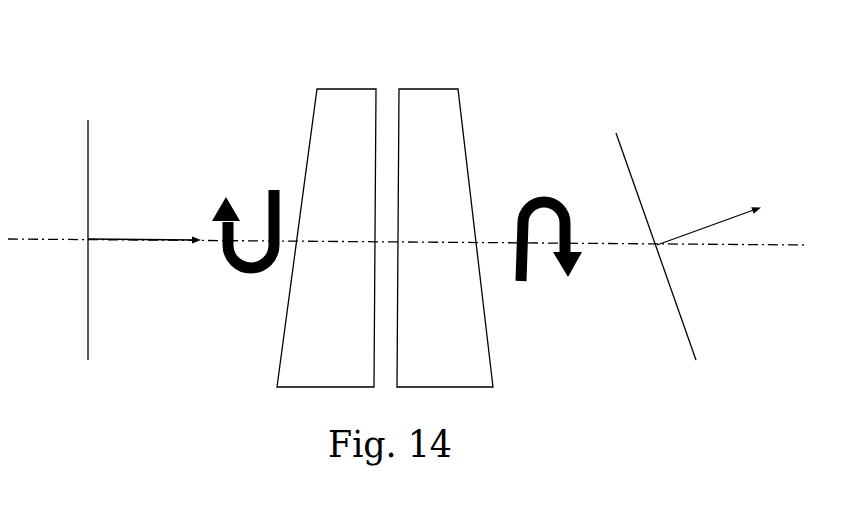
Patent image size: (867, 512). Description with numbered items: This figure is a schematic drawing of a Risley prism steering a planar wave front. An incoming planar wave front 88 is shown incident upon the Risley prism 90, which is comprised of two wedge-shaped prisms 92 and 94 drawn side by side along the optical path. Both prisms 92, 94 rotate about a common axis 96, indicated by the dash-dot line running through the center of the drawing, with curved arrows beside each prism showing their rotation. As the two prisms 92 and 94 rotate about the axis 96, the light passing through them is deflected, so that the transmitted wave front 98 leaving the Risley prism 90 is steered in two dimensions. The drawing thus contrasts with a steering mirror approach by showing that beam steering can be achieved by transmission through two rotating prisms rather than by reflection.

The planar wave front 88 is at (98, 226).
The Risley prism 90 is at (385, 216).
The prism 92 is at (283, 350).
The prism 94 is at (488, 362).
The axis 96 is at (733, 245).
The transmitted wave front 98 is at (627, 160).